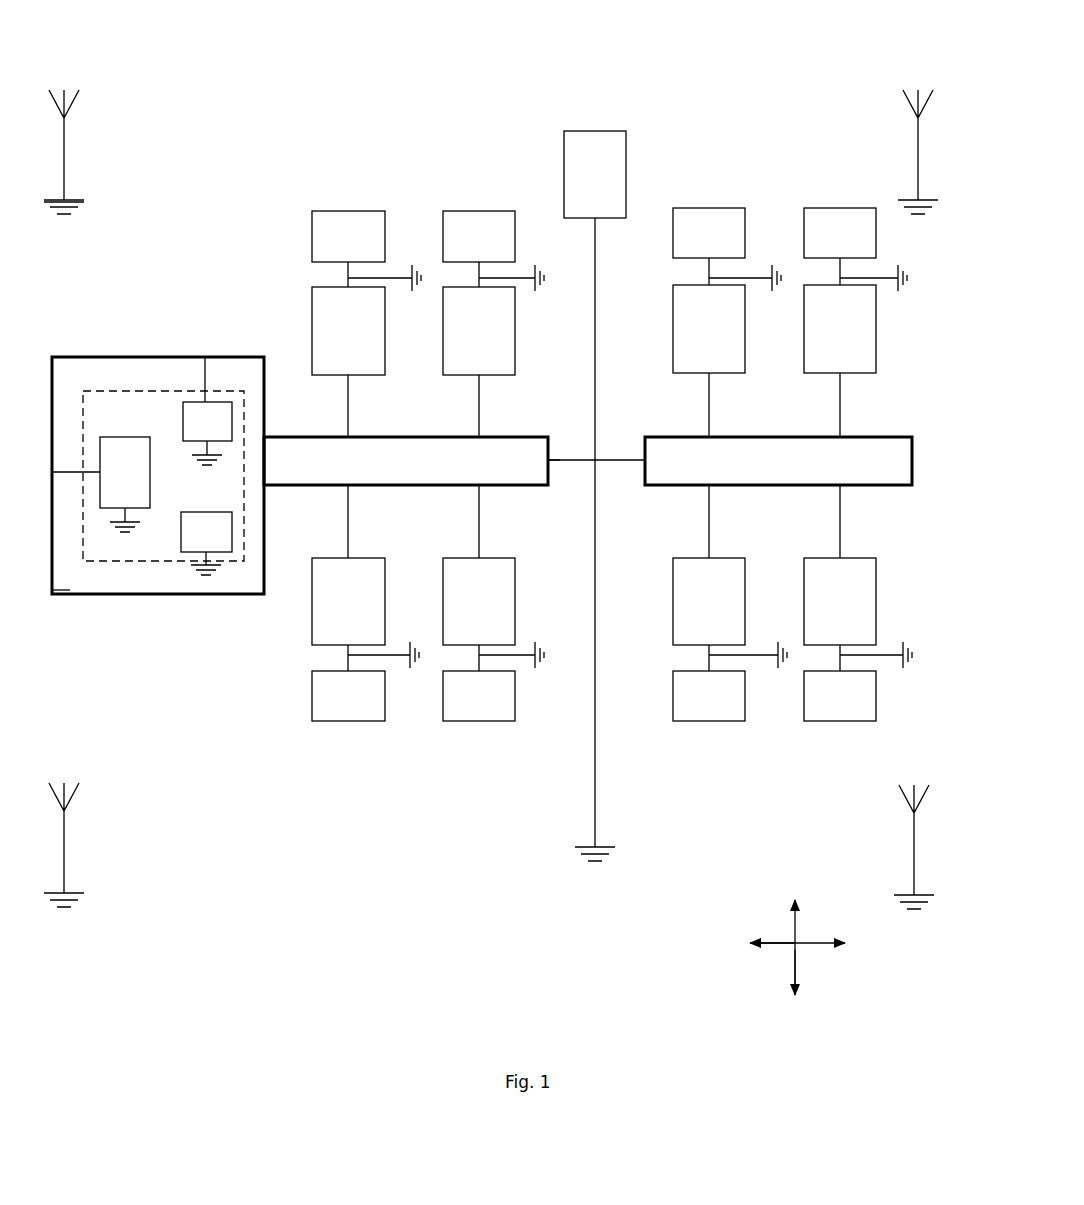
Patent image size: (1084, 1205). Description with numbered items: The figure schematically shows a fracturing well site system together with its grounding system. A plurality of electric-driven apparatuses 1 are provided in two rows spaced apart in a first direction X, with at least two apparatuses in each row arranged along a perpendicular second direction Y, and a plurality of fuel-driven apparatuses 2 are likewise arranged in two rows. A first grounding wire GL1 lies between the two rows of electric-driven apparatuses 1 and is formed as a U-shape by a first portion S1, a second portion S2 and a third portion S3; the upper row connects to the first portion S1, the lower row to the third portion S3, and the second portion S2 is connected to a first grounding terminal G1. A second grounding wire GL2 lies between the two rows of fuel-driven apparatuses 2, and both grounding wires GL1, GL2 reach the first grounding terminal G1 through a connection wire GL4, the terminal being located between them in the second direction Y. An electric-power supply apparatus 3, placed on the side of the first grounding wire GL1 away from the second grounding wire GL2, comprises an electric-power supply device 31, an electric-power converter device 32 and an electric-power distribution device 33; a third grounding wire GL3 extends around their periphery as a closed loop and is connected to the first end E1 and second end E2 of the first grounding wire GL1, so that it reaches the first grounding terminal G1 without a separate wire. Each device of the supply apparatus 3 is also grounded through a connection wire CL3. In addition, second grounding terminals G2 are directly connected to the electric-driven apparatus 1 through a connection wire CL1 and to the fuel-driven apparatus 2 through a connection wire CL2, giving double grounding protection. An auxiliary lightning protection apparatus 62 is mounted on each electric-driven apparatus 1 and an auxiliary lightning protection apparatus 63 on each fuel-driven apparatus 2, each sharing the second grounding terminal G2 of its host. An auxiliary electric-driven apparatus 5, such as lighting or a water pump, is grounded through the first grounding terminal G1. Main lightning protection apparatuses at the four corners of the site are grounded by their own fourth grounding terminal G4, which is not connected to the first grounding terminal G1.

The fourth grounding terminal G4 is at (88, 211).
The electric-power supply apparatus 3 is at (150, 388).
The connection wire CL3 is at (209, 370).
The electric-power supply device 31 is at (207, 433).
The electric-power converter device 32 is at (206, 543).
The electric-power distribution device 33 is at (101, 484).
The third grounding wire GL3 is at (62, 597).
The first grounding wire GL1 is at (525, 485).
The second grounding wire GL2 is at (908, 487).
The connection wire GL4 is at (568, 460).
The first end of the first grounding wire E1 is at (264, 432).
The second end of the first grounding wire E2 is at (264, 490).
The first portion S1 is at (388, 437).
The second portion S2 is at (550, 450).
The third portion S3 is at (405, 485).
The connection wire CL1 is at (483, 425).
The connection wire CL2 is at (713, 425).
The electric-driven apparatus 1 is at (413, 466).
The auxiliary lightning protection apparatus 62 is at (413, 466).
The fuel-driven apparatus 2 is at (774, 465).
The auxiliary lightning protection apparatus 63 is at (774, 464).
The second grounding terminal G2 is at (185, 487).
The auxiliary electric-driven apparatus 5 is at (595, 489).
The first grounding terminal G1 is at (603, 880).
The first direction X is at (795, 934).
The second direction Y is at (808, 944).